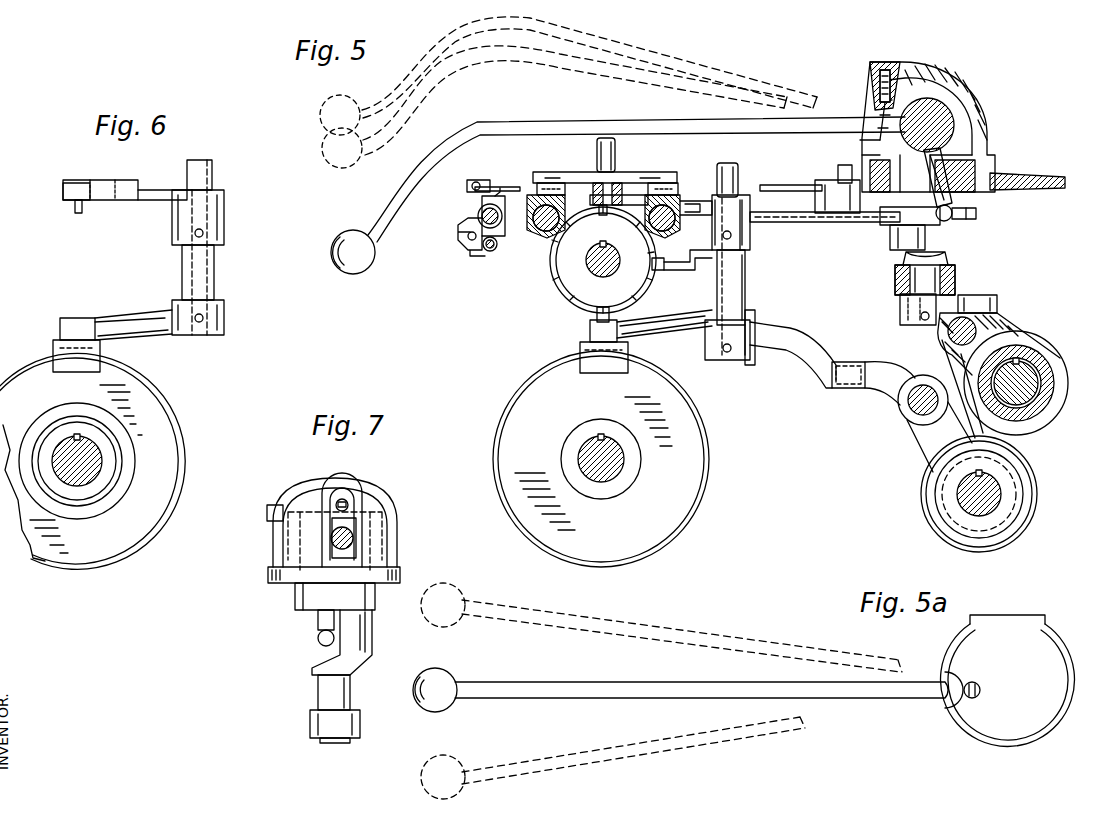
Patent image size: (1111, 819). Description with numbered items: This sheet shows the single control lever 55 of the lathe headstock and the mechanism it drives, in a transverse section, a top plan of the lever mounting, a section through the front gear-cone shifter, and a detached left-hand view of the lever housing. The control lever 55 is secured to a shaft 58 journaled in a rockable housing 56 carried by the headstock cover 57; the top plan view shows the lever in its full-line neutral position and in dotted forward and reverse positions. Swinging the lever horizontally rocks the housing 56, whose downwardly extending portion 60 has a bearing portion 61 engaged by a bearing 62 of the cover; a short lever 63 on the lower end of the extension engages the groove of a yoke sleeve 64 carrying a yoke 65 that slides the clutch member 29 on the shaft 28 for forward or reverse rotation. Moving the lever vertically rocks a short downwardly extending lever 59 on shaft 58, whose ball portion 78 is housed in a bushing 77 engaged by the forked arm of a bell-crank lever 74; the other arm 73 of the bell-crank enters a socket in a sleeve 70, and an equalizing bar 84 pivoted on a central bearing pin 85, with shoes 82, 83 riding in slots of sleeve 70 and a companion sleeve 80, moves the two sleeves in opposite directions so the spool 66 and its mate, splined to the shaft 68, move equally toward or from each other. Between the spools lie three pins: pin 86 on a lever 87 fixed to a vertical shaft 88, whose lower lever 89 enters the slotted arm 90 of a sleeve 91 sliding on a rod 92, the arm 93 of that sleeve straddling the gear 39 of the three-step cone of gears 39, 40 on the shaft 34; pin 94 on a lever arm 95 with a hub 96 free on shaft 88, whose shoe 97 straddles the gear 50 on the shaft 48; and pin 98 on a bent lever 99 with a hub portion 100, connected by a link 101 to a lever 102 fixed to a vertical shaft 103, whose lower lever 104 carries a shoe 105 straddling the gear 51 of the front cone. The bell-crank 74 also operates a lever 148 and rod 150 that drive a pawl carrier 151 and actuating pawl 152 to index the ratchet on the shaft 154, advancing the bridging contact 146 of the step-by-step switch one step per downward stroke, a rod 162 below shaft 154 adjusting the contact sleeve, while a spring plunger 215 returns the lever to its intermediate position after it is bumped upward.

In FIG. 5, the shaft 28 is at (1030, 382).
In FIG. 5, the clutch member 29 is at (1040, 418).
In FIG. 5, the shaft 34 is at (1005, 488).
In FIG. 5, the gear 39 is at (925, 510).
In FIG. 5, the gear 40 is at (1012, 490).
In FIG. 6, the shaft 48 is at (100, 462).
In FIG. 5, the shaft 48 is at (623, 465).
In FIG. 5, the gear 50 is at (712, 455).
In FIG. 6, the gear 51 is at (172, 428).
In FIG. 7, the control lever 55 is at (352, 537).
In FIG. 5A, the control lever 55 is at (610, 690).
In FIG. 5, the control lever 55 is at (563, 122).
In FIG. 7, the rockable housing 56 is at (388, 510).
In FIG. 5A, the rockable housing 56 is at (1045, 645).
In FIG. 5, the rockable housing 56 is at (965, 100).
In FIG. 5, the cover 57 is at (1025, 175).
In FIG. 7, the shaft 58 is at (375, 545).
In FIG. 5, the shaft 58 is at (955, 122).
In FIG. 7, the short lever 59 is at (318, 618).
In FIG. 5, the short lever 59 is at (952, 195).
In FIG. 7, the downwardly extending portion 60 is at (372, 632).
In FIG. 7, the bearing portion 61 is at (350, 692).
In FIG. 5, the bearing portion 61 is at (905, 281).
In FIG. 5, the bearing 62 is at (955, 280).
In FIG. 7, the short lever 63 is at (360, 725).
In FIG. 5, the short lever 63 is at (900, 318).
In FIG. 5, the yoke sleeve 64 is at (990, 320).
In FIG. 5, the yoke 65 is at (1030, 342).
In FIG. 5, the spool 66 is at (565, 285).
In FIG. 5, the shaft 68 is at (588, 262).
In FIG. 5, the sleeve 70 is at (680, 222).
In FIG. 5, the arm 73 is at (785, 220).
In FIG. 5, the bell-crank lever 74 is at (880, 220).
In FIG. 5, the bushing 77 is at (976, 215).
In FIG. 7, the ball joint 78 is at (318, 640).
In FIG. 5, the ball joint 78 is at (948, 220).
In FIG. 5, the sleeve 80 is at (540, 235).
In FIG. 5, the shoe 82 is at (537, 186).
In FIG. 5, the shoe 83 is at (672, 183).
In FIG. 5, the equalizing bar 84 is at (632, 172).
In FIG. 5, the bearing pin 85 is at (615, 152).
In FIG. 5, the pin 86 is at (658, 270).
In FIG. 5, the lever 87 is at (700, 268).
In FIG. 5, the vertical shaft 88 is at (750, 263).
In FIG. 5, the lever 89 is at (810, 385).
In FIG. 5, the arm 90 is at (884, 392).
In FIG. 5, the sleeve 91 is at (902, 420).
In FIG. 5, the rod 92 is at (917, 415).
In FIG. 5, the arm 93 is at (925, 450).
In FIG. 5, the pin 94 is at (595, 314).
In FIG. 5, the lever arm 95 is at (665, 328).
In FIG. 5, the hub 96 is at (755, 335).
In FIG. 5, the shoe 97 is at (580, 360).
In FIG. 6, the pin 98 is at (75, 207).
In FIG. 5, the pin 98 is at (603, 214).
In FIG. 6, the bent lever 99 is at (63, 196).
In FIG. 5, the hub portion 100 is at (745, 195).
In FIG. 6, the link 101 is at (95, 185).
In FIG. 6, the lever 102 is at (145, 190).
In FIG. 6, the vertical shaft 103 is at (212, 176).
In FIG. 6, the lever 104 is at (145, 325).
In FIG. 6, the shoe 105 is at (52, 350).
In FIG. 5, the bridging contact 146 is at (500, 185).
In FIG. 5, the lever 148 is at (840, 182).
In FIG. 5, the rod 150 is at (820, 186).
In FIG. 5, the pawl carrier 151 is at (470, 195).
In FIG. 5, the actuating pawl 152 is at (466, 248).
In FIG. 5, the shaft 154 is at (482, 213).
In FIG. 5, the rod 162 is at (487, 252).
In FIG. 7, the spring plunger 215 is at (336, 500).
In FIG. 5, the spring plunger 215 is at (870, 95).